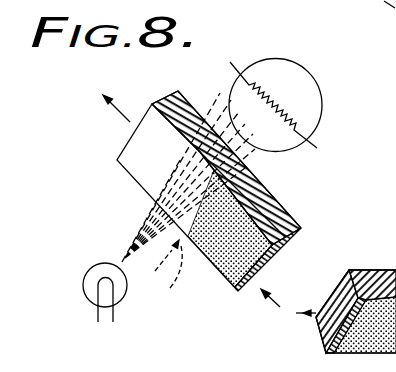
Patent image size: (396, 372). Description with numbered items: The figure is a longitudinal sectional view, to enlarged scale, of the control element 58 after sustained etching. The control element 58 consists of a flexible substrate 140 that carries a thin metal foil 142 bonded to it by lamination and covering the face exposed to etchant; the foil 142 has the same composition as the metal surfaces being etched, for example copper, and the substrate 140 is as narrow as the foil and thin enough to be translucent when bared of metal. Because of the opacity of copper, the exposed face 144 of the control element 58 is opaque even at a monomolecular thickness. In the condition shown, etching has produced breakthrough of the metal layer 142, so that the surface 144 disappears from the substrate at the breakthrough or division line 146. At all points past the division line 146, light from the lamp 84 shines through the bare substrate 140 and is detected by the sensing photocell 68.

The control element 58 is at (299, 204).
The sensing photocell 68 is at (322, 118).
The lamp 84 is at (96, 264).
The flexible substrate 140 is at (287, 254).
The metal foil 142 is at (263, 188).
The exposed face 144 is at (215, 258).
The division line 146 is at (161, 278).